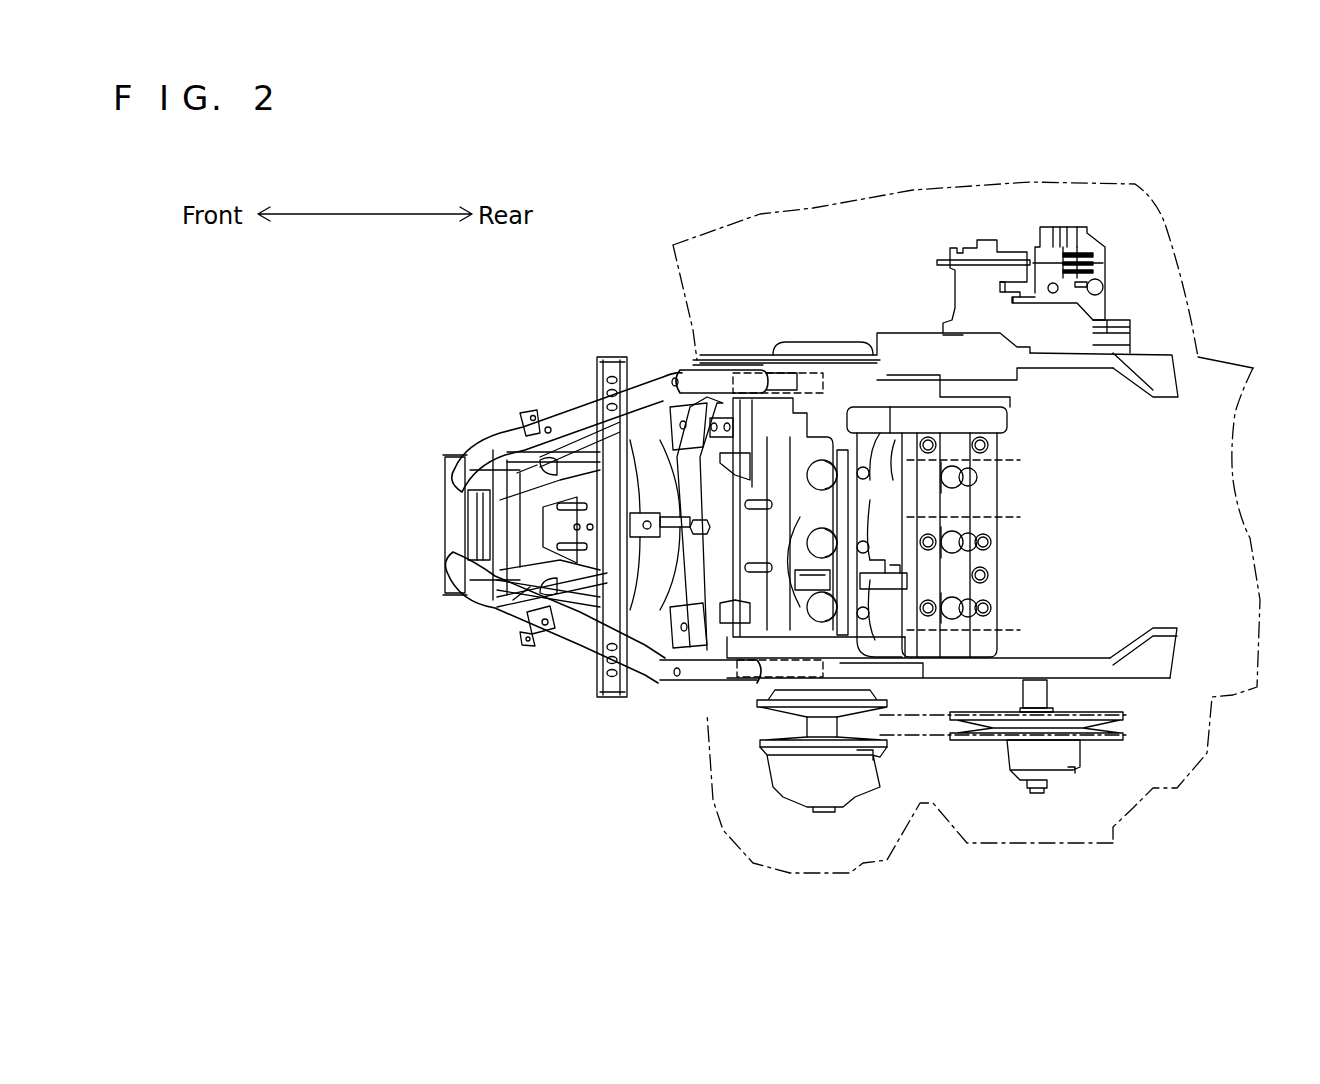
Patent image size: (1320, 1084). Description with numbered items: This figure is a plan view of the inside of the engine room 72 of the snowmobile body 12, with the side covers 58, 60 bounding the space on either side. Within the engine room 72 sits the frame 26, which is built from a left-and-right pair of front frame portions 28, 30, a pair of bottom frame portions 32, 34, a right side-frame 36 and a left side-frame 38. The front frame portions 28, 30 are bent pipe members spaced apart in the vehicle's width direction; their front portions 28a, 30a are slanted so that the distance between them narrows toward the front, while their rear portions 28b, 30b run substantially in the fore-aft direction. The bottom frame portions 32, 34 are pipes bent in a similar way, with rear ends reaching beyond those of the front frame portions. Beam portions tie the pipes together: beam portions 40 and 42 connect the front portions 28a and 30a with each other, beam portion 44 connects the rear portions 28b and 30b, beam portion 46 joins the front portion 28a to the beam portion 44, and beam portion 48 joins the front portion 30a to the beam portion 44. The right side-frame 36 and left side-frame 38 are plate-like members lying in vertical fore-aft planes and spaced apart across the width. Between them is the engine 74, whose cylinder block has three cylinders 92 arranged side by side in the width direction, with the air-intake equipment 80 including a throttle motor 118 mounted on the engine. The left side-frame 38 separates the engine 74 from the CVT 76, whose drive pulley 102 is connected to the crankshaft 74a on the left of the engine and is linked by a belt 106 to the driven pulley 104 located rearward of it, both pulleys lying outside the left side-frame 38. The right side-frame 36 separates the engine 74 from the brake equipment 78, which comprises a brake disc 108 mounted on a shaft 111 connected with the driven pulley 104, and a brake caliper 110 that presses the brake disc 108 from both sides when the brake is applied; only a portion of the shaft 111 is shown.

The snowmobile body 12 is at (627, 228).
The frame 26 is at (433, 520).
The front frame portion 28 is at (507, 417).
The front portion 28a is at (547, 422).
The rear portion 28b is at (726, 368).
The front frame portion 30 is at (481, 613).
The front portion 30a is at (510, 630).
The rear portion 30b is at (690, 674).
The bottom frame portion 32 is at (805, 373).
The bottom frame portion 34 is at (766, 684).
The right side-frame 36 is at (872, 406).
The left side-frame 38 is at (1133, 676).
The beam portion 40 is at (497, 508).
The beam portion 42 is at (530, 530).
The beam portion 44 is at (695, 418).
The beam portion 46 is at (583, 450).
The beam portion 48 is at (560, 600).
The side cover 58 is at (1090, 845).
The side cover 60 is at (813, 207).
The engine room 72 is at (752, 255).
The engine 74 is at (838, 397).
The crankshaft 74a is at (825, 727).
The CVT 76 is at (743, 783).
The brake equipment 78 is at (988, 222).
The air-intake equipment 80 is at (797, 470).
The cylinders 92 is at (1000, 460).
The drive pulley 102 is at (845, 742).
The driven pulley 104 is at (1085, 735).
The belt 106 is at (913, 742).
The brake disc 108 is at (940, 257).
The brake caliper 110 is at (1070, 245).
The shaft 111 is at (1040, 692).
The throttle motor 118 is at (905, 578).